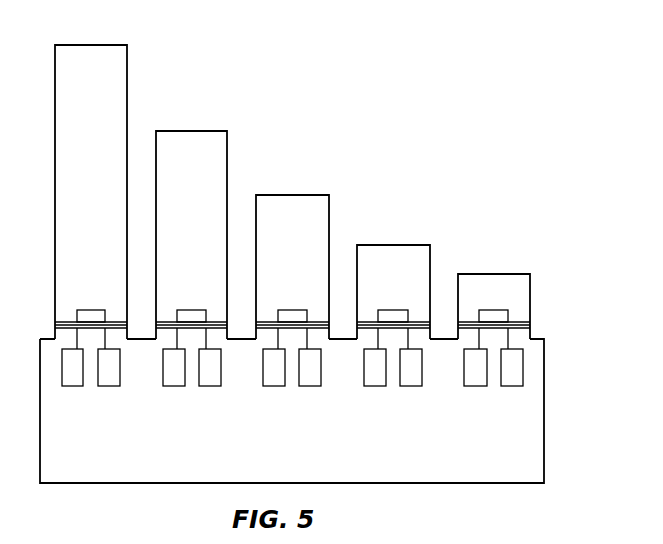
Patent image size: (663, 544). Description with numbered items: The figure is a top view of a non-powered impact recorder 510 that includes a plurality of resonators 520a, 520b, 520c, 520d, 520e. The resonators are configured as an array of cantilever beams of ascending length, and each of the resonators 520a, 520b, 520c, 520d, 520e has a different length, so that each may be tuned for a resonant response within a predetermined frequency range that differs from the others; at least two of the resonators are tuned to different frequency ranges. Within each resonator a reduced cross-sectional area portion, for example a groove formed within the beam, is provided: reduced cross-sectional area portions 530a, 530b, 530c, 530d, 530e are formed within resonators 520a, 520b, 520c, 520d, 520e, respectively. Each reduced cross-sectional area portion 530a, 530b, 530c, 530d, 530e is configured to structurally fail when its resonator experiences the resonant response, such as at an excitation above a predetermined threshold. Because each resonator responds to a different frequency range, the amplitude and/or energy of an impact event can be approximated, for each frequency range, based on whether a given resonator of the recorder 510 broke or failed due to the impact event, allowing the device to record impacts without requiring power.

The non-powered impact recorder 510 is at (340, 47).
The resonator 520a is at (129, 80).
The resonator 520b is at (229, 160).
The resonator 520c is at (331, 212).
The resonator 520d is at (432, 255).
The resonator 520e is at (532, 291).
The reduced cross-sectional area portion 530a is at (68, 322).
The reduced cross-sectional area portion 530b is at (168, 322).
The reduced cross-sectional area portion 530c is at (268, 322).
The reduced cross-sectional area portion 530d is at (368, 322).
The reduced cross-sectional area portion 530e is at (470, 322).